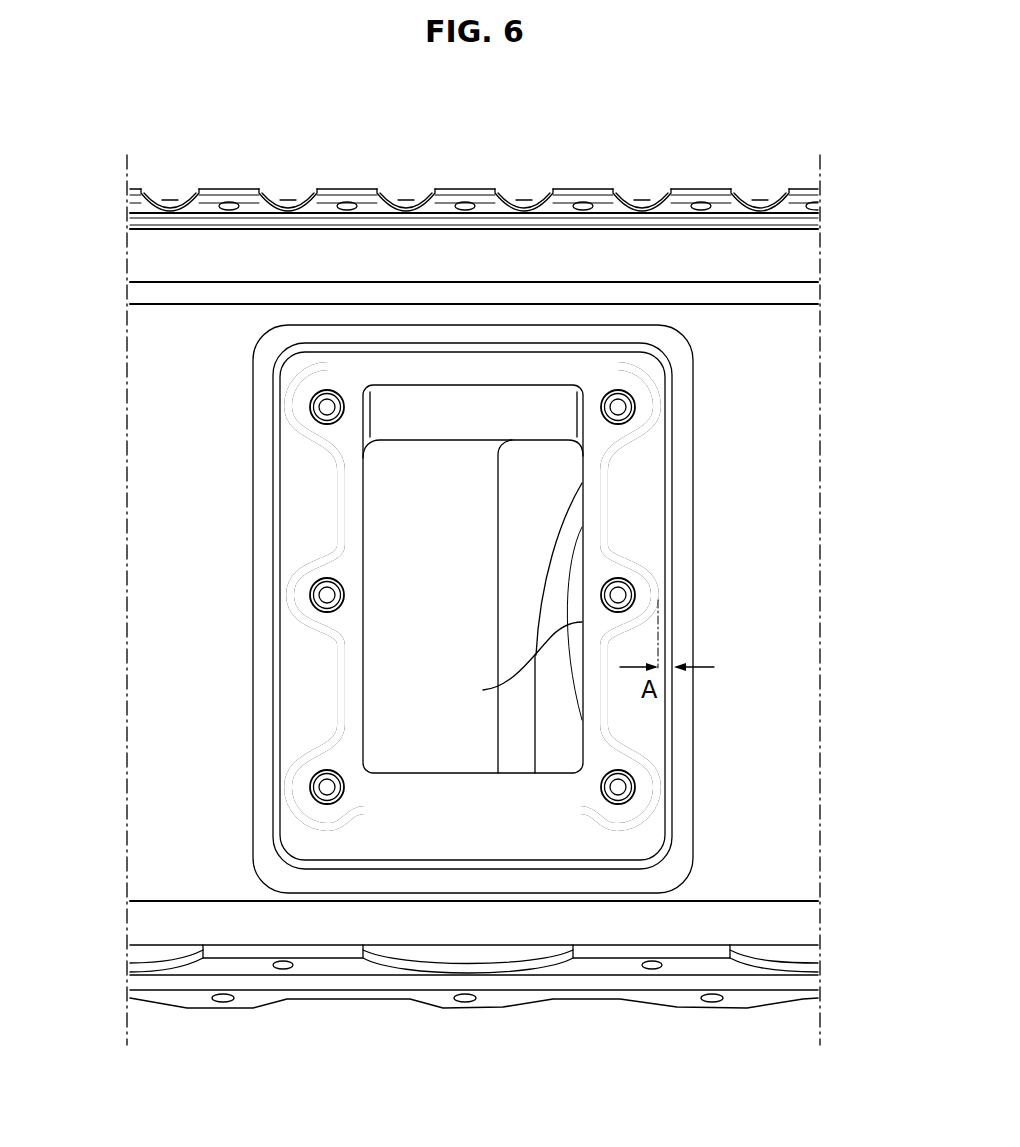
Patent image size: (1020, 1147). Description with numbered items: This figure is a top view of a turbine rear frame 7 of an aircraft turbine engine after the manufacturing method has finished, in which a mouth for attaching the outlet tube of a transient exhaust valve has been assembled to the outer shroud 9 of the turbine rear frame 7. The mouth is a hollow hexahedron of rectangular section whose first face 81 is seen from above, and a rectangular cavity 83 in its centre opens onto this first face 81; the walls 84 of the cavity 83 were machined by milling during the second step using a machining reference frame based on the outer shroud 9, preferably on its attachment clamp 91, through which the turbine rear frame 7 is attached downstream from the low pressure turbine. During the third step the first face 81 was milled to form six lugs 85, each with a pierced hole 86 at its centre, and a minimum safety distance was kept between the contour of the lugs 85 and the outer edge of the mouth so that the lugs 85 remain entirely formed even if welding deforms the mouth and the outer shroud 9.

The turbine rear frame 7 is at (590, 1022).
The outer shroud 9 is at (772, 361).
The first face 81 is at (477, 357).
The cavity 83 is at (487, 603).
The walls 84 is at (447, 420).
The lugs 85 is at (305, 416).
The pierced hole 86 is at (322, 406).
The attachment clamp 91 is at (583, 190).